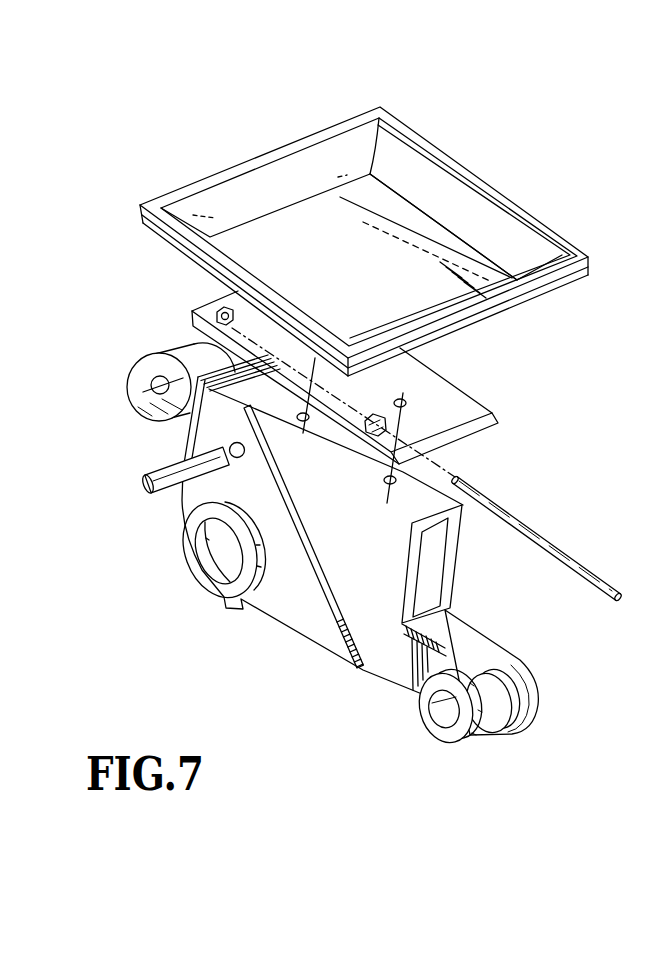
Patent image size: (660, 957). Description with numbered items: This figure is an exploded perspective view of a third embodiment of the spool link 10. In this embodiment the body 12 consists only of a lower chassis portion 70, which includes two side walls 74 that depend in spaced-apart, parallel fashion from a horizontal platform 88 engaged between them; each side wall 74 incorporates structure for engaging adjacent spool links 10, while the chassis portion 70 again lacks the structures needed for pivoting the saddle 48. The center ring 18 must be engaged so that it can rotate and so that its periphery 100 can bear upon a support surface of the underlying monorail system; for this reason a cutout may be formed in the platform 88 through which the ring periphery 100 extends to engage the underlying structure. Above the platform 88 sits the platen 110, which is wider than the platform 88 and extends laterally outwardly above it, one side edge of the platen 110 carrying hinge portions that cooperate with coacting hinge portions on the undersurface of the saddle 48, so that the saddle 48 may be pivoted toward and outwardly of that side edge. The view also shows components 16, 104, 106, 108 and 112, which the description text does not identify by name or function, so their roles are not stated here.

The spool link 10 is at (490, 125).
The body 12 is at (249, 657).
The tray hopper 16 is at (211, 149).
The center ring 18 is at (156, 335).
The saddle 48 is at (370, 278).
The lower chassis portion 70 is at (307, 665).
The side walls 74 is at (397, 663).
The platform 88 is at (411, 505).
The periphery 100 is at (183, 352).
The pivot hole 104 is at (243, 458).
The side plate edge 106 is at (187, 433).
The pin 108 is at (146, 476).
The platen 110 is at (464, 412).
The tray side wall 112 is at (522, 248).